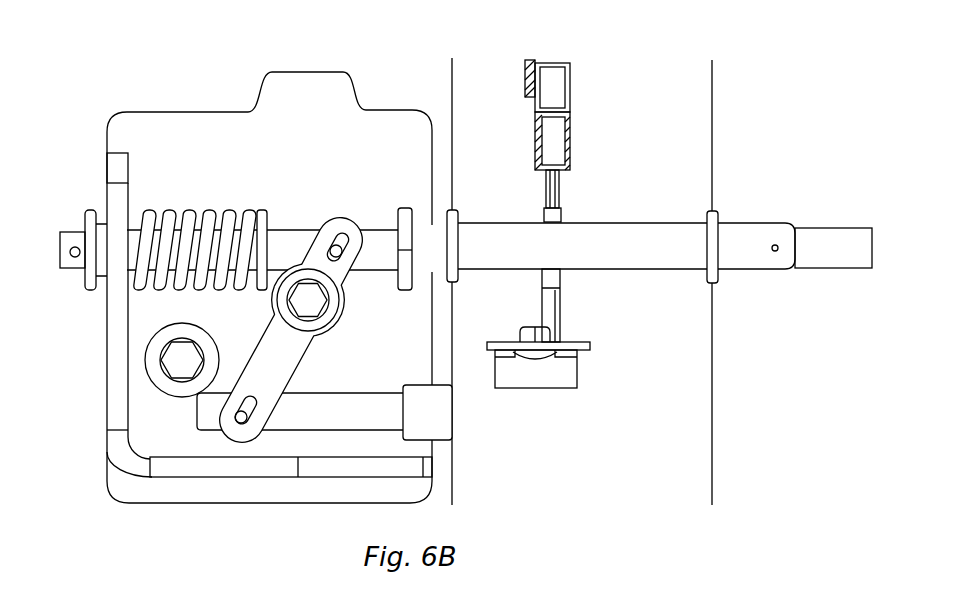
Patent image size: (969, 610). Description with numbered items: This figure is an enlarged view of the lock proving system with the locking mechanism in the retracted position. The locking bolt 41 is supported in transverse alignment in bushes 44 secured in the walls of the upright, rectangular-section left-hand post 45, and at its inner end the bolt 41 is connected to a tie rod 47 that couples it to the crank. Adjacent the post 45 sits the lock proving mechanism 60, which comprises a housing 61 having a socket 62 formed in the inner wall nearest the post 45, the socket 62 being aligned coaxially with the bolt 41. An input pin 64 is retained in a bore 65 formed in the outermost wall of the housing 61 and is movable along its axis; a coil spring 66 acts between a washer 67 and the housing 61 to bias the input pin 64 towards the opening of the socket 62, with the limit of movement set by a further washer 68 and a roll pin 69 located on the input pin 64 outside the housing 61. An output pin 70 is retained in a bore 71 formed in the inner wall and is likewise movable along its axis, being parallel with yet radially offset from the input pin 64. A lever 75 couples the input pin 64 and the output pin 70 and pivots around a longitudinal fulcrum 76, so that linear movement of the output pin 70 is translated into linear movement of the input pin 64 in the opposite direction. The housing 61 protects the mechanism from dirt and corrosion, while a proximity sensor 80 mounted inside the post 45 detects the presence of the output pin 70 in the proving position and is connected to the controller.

The bolt 41 is at (650, 247).
The bush 44 is at (456, 213).
The post 45 is at (716, 105).
The tie rod 47 is at (841, 243).
The lock proving mechanism 60 is at (240, 272).
The housing 61 is at (112, 363).
The socket 62 is at (423, 240).
The input pin 64 is at (298, 238).
The bore 65 is at (102, 216).
The coil spring 66 is at (202, 212).
The washer 67 is at (262, 208).
The further washer 68 is at (90, 292).
The roll pin 69 is at (73, 256).
The output pin 70 is at (352, 405).
The bore 71 is at (432, 392).
The lever 75 is at (303, 329).
The fulcrum 76 is at (308, 300).
The proximity sensor 80 is at (578, 371).